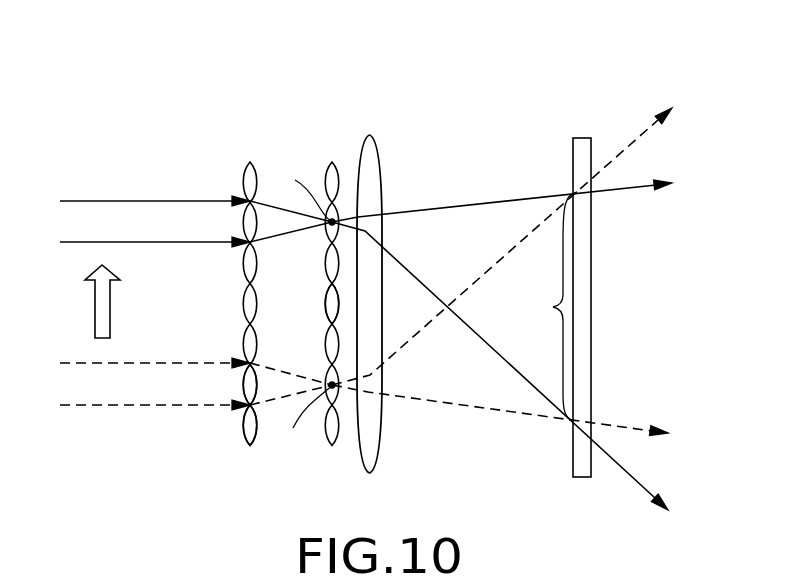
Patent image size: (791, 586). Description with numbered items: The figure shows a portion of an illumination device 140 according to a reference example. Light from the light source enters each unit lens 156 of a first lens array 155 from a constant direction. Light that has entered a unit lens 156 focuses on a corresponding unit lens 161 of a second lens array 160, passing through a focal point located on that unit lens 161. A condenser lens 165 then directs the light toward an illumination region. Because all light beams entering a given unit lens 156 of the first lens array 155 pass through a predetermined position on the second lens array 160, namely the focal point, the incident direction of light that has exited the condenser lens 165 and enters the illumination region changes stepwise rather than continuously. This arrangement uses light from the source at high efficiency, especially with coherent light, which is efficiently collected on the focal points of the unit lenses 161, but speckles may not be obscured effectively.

The illumination device 140 is at (480, 102).
The first lens array 155 is at (247, 150).
The unit lens 156 is at (246, 380).
The second lens array 160 is at (330, 150).
The unit lens 161 is at (329, 319).
The condenser lens 165 is at (367, 180).